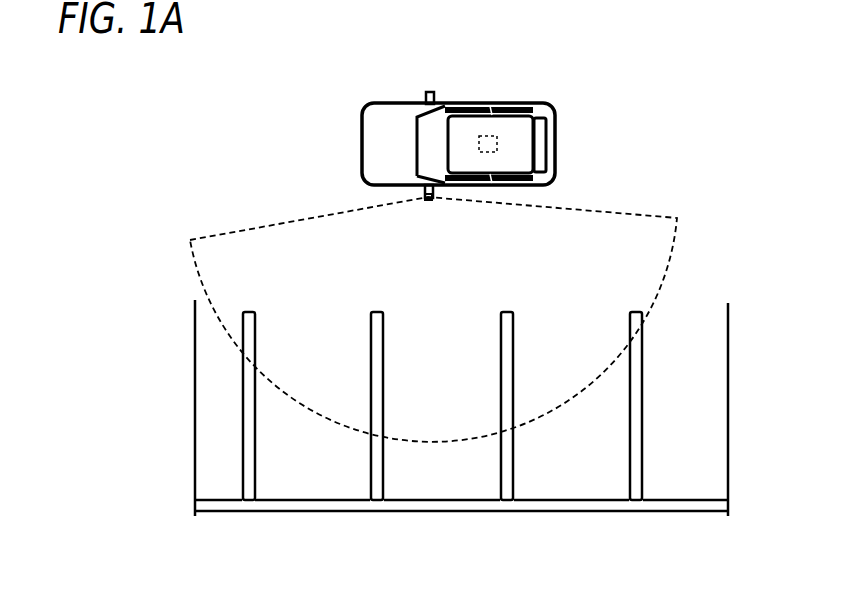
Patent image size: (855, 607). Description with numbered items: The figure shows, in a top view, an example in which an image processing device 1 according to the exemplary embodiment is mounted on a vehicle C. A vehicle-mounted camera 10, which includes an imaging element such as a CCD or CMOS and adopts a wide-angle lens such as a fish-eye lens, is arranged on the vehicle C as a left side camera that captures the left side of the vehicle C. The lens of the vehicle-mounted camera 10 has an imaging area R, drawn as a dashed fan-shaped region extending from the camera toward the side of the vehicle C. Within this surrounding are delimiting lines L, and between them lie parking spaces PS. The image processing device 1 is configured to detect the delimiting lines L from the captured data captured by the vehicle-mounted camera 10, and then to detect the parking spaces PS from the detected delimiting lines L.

The image processing device 1 is at (481, 134).
The vehicle C is at (547, 106).
The vehicle-mounted camera 10 is at (428, 200).
The imaging area R is at (603, 213).
The parking space PS is at (311, 352).
The delimiting line L is at (247, 448).